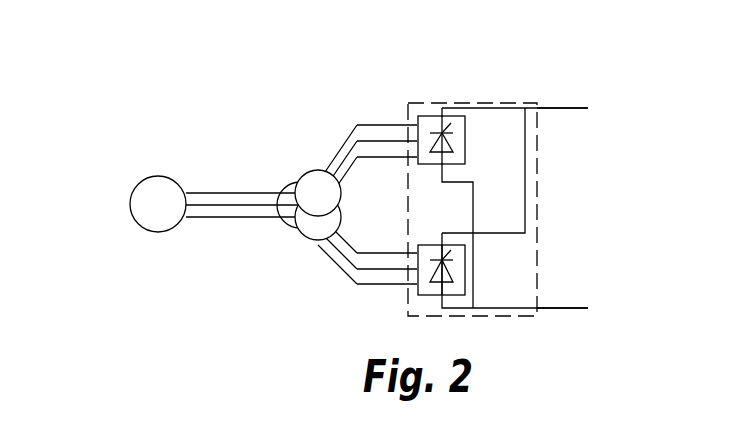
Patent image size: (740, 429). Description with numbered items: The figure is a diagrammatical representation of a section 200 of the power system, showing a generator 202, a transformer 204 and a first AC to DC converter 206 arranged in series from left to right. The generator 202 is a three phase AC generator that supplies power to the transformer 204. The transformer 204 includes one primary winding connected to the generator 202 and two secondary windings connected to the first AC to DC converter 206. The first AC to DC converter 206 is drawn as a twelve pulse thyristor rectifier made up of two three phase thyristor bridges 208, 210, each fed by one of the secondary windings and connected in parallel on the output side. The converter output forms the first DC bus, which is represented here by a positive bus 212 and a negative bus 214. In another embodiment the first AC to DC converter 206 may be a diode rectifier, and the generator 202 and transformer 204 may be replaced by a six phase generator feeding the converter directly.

The section 200 is at (145, 92).
The generator 202 is at (138, 184).
The transformer 204 is at (293, 184).
The first AC to DC converter 206 is at (495, 89).
The three phase thyristor bridge 208 is at (465, 149).
The three phase thyristor bridge 210 is at (421, 245).
The positive bus 212 is at (588, 109).
The negative bus 214 is at (567, 309).